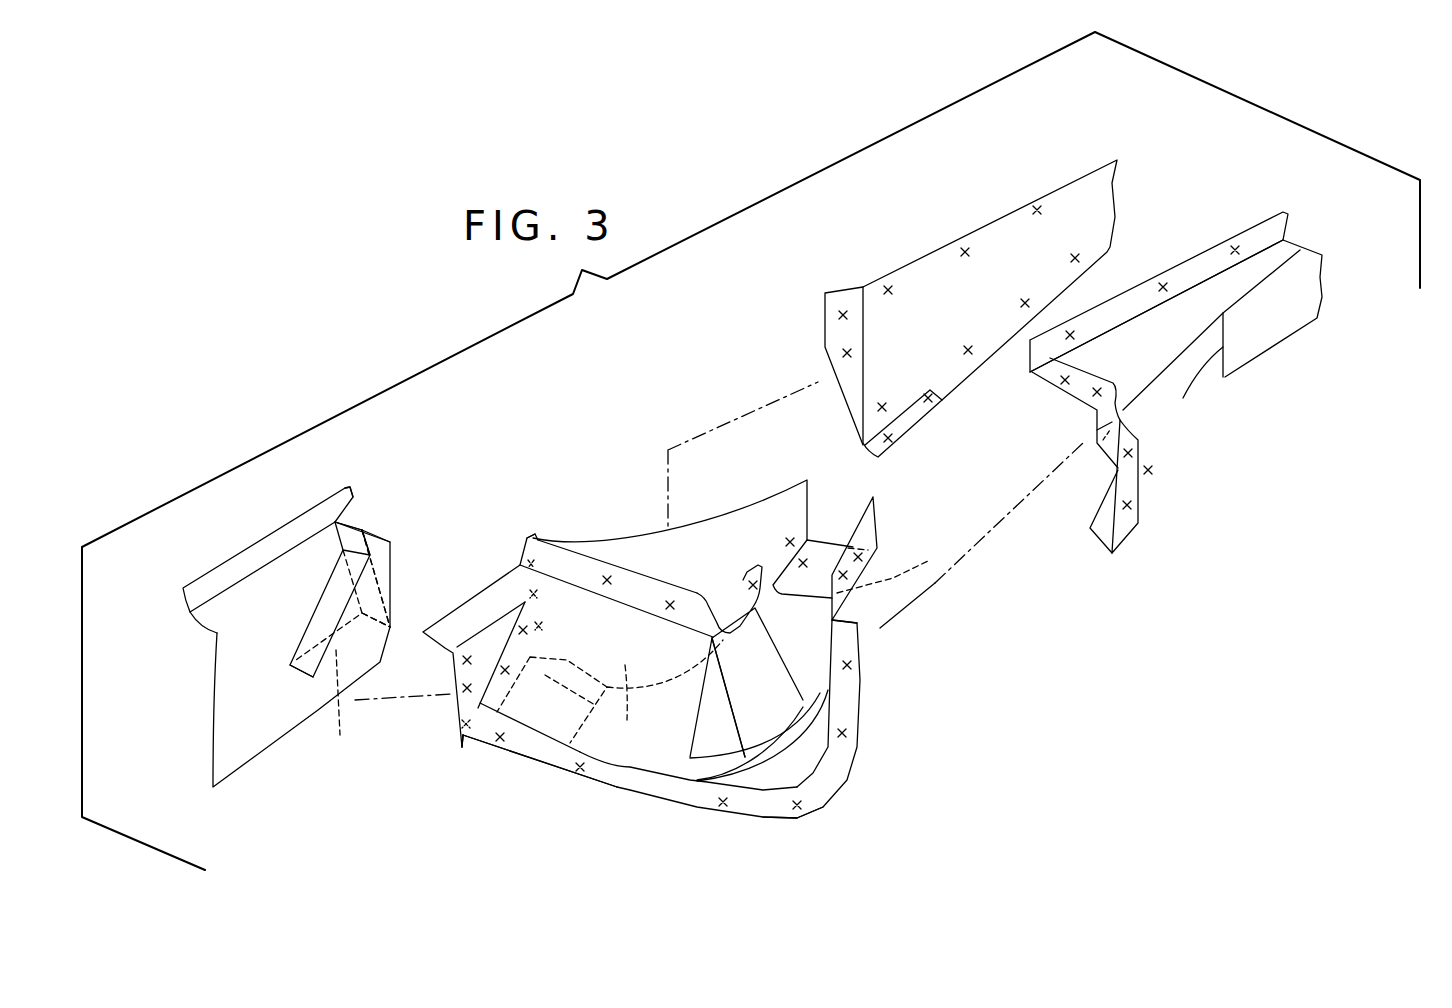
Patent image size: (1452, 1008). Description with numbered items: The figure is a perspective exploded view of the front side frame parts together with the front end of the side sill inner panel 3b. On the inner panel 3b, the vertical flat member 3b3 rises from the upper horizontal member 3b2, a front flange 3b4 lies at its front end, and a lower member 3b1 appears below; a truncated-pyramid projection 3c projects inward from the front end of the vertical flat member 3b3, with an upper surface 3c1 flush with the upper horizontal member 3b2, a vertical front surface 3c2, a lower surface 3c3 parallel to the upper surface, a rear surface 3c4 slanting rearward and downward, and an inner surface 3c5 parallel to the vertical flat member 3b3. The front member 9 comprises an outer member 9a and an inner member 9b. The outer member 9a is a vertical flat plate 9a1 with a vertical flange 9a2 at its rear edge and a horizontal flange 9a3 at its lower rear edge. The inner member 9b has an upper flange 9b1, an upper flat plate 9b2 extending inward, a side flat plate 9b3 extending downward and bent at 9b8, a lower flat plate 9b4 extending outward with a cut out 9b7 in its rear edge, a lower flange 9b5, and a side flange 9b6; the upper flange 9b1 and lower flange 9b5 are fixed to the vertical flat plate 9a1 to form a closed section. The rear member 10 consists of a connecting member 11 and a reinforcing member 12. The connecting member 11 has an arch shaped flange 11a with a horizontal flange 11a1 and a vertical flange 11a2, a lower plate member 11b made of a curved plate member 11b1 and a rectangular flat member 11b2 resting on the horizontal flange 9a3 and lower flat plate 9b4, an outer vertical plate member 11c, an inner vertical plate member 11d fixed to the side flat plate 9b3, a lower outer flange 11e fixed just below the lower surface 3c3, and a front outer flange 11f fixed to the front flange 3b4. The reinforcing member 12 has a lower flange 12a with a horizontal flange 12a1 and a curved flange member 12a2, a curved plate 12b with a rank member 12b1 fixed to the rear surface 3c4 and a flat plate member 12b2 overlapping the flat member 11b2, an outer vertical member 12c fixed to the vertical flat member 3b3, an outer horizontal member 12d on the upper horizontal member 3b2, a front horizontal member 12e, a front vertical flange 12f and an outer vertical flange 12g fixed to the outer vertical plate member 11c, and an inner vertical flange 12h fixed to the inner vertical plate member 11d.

The inner panel 3b is at (249, 641).
The upper flange of bracket 3b1 is at (185, 600).
The upper horizontal member 3b2 is at (210, 626).
The vertical flat member 3b3 is at (257, 740).
The front flange 3b4 is at (348, 517).
The projection 3c is at (351, 617).
The upper surface 3c1 is at (360, 532).
The front surface 3c2 is at (387, 568).
The lower surface 3c3 is at (339, 708).
The rear surface 3c4 is at (315, 632).
The inner surface 3c5 is at (362, 595).
The front member 9 is at (1192, 209).
The outer member 9a is at (921, 318).
The vertical flat plate 9a1 is at (992, 240).
The vertical flange 9a2 is at (842, 330).
The horizontal flange 9a3 is at (917, 413).
The inner member 9b is at (1180, 372).
The upper flange 9b1 is at (1255, 237).
The upper flat plate 9b2 is at (1147, 337).
The side flat plate 9b3 is at (1282, 330).
The lower flat plate 9b4 is at (1107, 447).
The lower flange 9b5 is at (1102, 425).
The side flange 9b6 is at (1135, 487).
The cut out 9b7 is at (1100, 488).
The bend 9b8 is at (1186, 386).
The rear member 10 is at (642, 447).
The connecting member 11 is at (683, 688).
The arch shaped flange 11a is at (740, 803).
The horizontal flange 11a1 is at (673, 795).
The vertical flange 11a2 is at (840, 758).
The lower plate member 11b is at (803, 770).
The curved plate member 11b1 is at (610, 690).
The flat member 11b2 is at (823, 557).
The outer vertical plate member 11c is at (605, 548).
The inner vertical plate member 11d is at (873, 525).
The lower outer flange 11e is at (467, 740).
The front outer flange 11f is at (533, 535).
The reinforcing member 12 is at (660, 672).
The lower flange 12a is at (613, 777).
The horizontal flange 12a1 is at (517, 748).
The curved flange member 12a2 is at (747, 763).
The curved plate 12b is at (670, 745).
The rank member 12b1 is at (547, 725).
The flat plate member 12b2 is at (815, 610).
The outer vertical member 12c is at (462, 703).
The outer horizontal member 12d is at (493, 595).
The front horizontal member 12e is at (623, 610).
The front vertical flange 12f is at (560, 553).
The outer vertical flange 12g is at (752, 565).
The inner vertical flange 12h is at (885, 570).